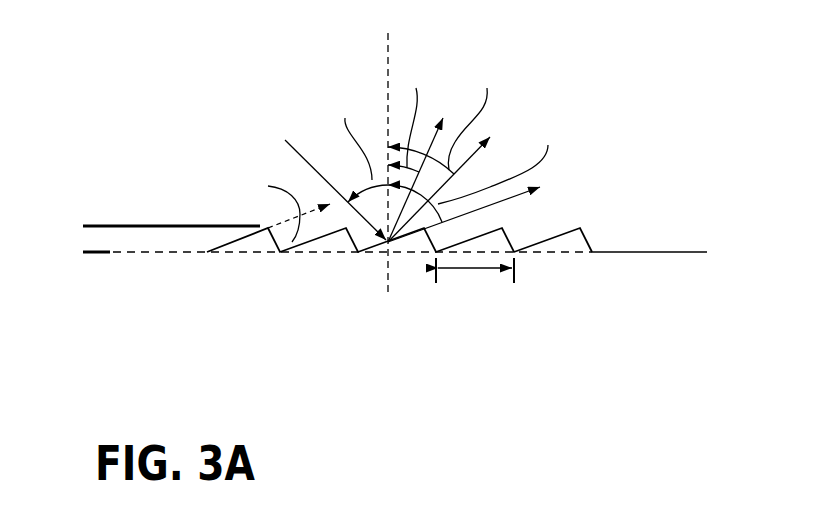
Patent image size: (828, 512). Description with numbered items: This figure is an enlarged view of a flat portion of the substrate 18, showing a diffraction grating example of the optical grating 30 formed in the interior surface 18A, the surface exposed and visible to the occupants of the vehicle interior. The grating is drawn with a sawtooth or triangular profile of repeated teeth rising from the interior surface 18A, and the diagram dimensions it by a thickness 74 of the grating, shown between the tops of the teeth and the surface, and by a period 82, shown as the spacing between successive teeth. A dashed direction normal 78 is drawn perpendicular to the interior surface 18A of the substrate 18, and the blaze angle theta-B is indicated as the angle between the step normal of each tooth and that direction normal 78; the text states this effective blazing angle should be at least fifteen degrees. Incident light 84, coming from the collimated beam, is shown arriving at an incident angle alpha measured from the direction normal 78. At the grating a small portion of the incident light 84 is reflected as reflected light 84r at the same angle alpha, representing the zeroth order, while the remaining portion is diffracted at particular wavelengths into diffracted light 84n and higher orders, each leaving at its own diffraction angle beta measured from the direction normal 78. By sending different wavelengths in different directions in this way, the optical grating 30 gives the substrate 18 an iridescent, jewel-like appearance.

The substrate 18 is at (627, 373).
The interior surface 18A is at (651, 252).
The optical grating 30 is at (592, 310).
The thickness 74 is at (98, 304).
The direction normal 78 is at (387, 60).
The period 82 is at (463, 270).
The incident light 84 is at (329, 167).
The diffracted light 84n is at (429, 153).
The reflected light 84r is at (454, 152).